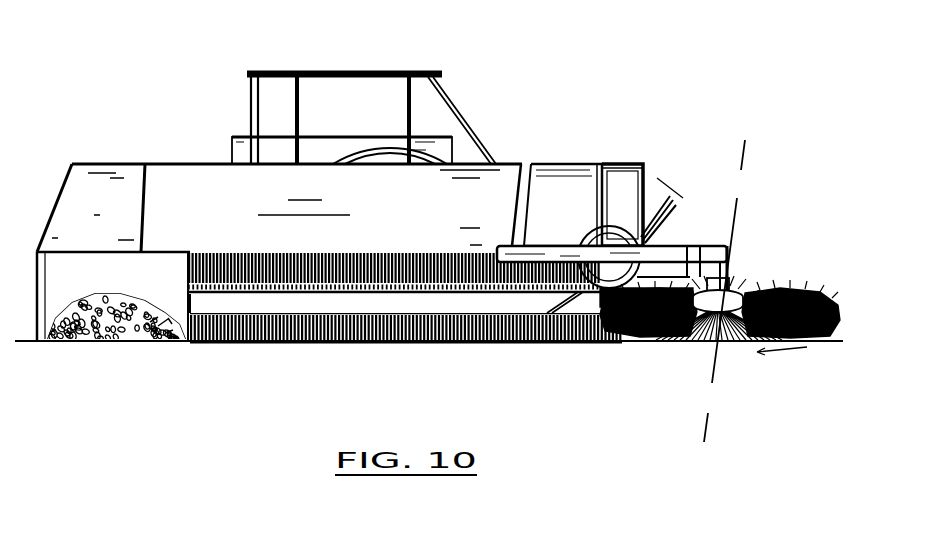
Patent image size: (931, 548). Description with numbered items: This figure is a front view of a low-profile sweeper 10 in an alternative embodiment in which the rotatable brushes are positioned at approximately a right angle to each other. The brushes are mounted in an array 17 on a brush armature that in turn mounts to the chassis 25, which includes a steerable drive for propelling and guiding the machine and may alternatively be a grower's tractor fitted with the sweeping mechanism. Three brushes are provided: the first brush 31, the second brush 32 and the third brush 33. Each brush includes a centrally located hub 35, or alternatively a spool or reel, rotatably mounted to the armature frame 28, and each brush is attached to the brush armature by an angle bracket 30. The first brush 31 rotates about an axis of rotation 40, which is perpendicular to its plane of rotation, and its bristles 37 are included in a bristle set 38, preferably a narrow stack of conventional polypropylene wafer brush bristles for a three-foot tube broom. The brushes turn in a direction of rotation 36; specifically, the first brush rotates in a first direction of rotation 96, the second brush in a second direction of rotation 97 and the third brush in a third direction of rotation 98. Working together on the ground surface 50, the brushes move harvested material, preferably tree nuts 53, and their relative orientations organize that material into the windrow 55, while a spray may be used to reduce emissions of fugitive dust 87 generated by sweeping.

The low-profile sweeper 10 is at (508, 70).
The array 17 is at (562, 362).
The chassis 25 is at (240, 155).
The armature frame 28 is at (675, 247).
The angle bracket 30 is at (709, 246).
The first brush 31 is at (720, 293).
The second brush 32 is at (608, 241).
The third brush 33 is at (278, 305).
The hub 35 is at (210, 343).
The direction of rotation 36 is at (770, 348).
The bristles 37 is at (810, 297).
The bristle set 38 is at (683, 341).
The axis of rotation 40 is at (743, 153).
The ground surface 50 is at (837, 338).
The tree nuts 53 is at (132, 340).
The windrow 55 is at (82, 341).
The fugitive dust 87 is at (158, 312).
The first direction of rotation 96 is at (808, 345).
The second direction of rotation 97 is at (682, 202).
The third direction of rotation 98 is at (186, 301).